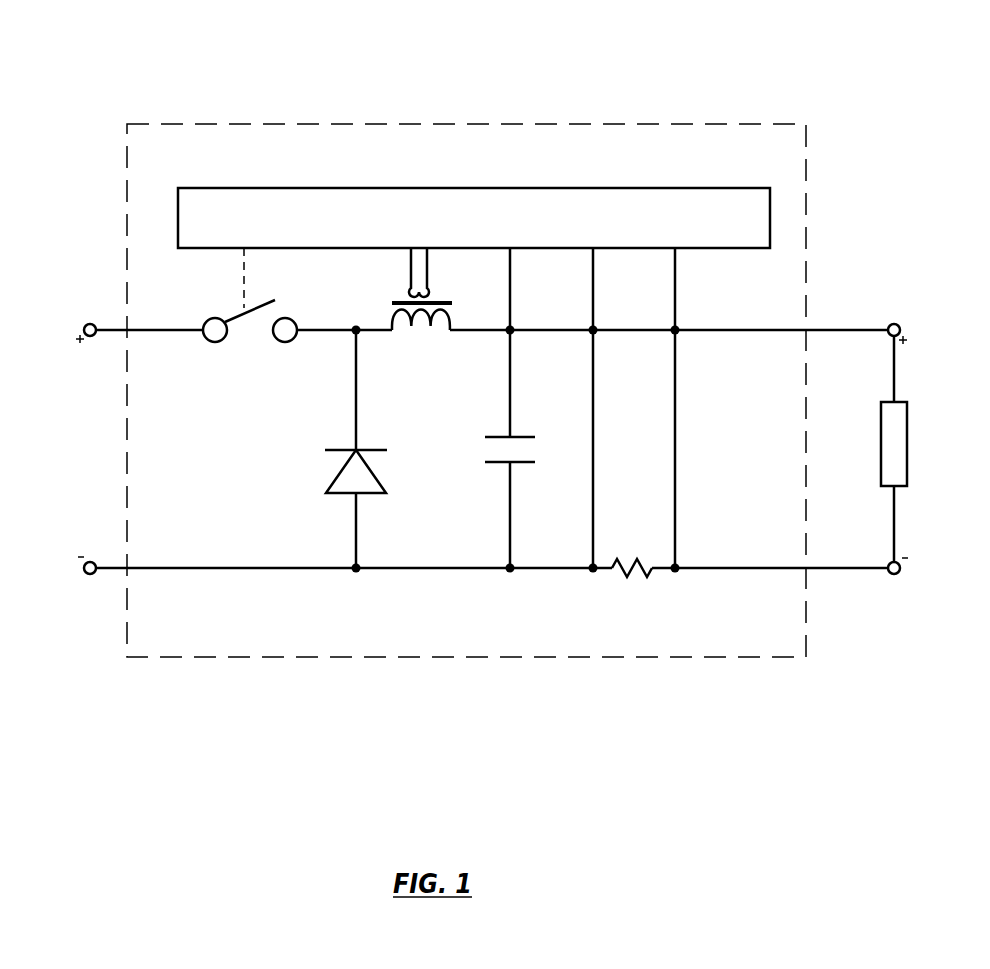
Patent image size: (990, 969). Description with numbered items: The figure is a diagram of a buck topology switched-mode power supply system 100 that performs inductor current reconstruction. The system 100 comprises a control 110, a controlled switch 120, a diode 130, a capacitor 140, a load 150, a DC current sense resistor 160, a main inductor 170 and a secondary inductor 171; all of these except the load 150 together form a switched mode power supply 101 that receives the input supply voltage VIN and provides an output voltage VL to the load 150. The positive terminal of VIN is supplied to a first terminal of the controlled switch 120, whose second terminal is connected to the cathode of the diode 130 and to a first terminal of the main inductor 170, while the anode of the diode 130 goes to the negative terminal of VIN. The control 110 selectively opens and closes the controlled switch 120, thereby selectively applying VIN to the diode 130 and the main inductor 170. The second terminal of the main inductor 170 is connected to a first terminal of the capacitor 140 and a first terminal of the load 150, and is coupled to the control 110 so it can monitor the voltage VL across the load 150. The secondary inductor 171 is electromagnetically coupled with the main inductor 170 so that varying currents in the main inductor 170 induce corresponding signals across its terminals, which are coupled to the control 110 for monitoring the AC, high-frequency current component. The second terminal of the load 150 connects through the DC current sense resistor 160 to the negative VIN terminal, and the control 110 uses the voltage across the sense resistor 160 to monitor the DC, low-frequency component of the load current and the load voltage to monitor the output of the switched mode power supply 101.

The buck topology switched-mode power supply system 100 is at (870, 56).
The switched mode power supply 101 is at (797, 646).
The control 110 is at (560, 231).
The controlled switch 120 is at (243, 343).
The diode 130 is at (340, 449).
The capacitor 140 is at (505, 436).
The load 150 is at (908, 425).
The DC current sense resistor 160 is at (618, 568).
The main inductor 170 is at (440, 333).
The secondary inductor 171 is at (412, 290).